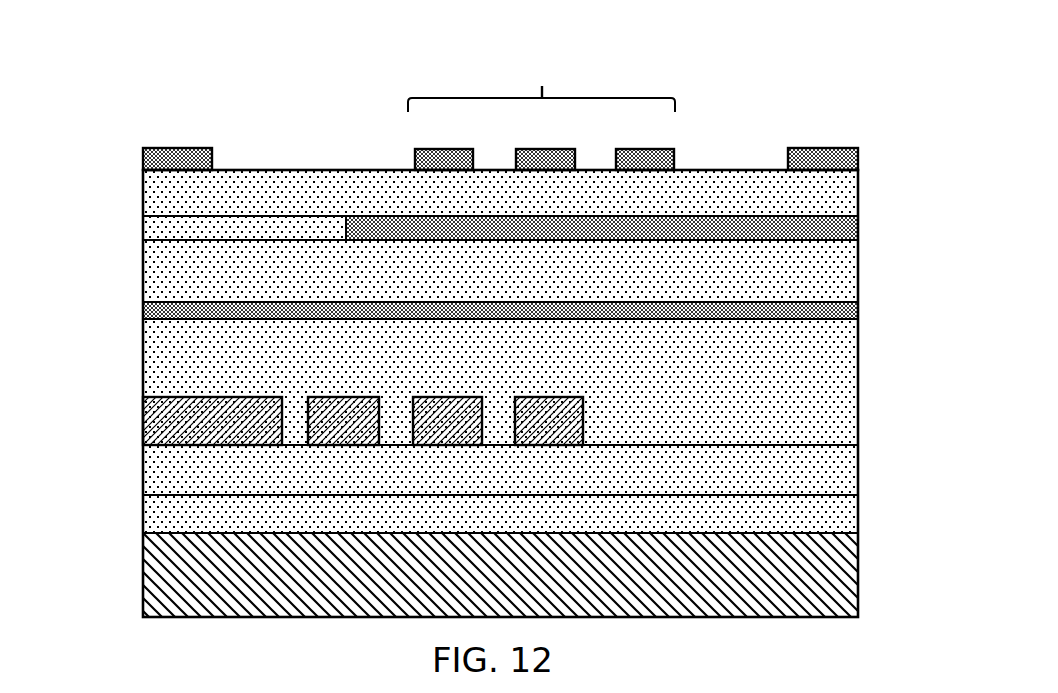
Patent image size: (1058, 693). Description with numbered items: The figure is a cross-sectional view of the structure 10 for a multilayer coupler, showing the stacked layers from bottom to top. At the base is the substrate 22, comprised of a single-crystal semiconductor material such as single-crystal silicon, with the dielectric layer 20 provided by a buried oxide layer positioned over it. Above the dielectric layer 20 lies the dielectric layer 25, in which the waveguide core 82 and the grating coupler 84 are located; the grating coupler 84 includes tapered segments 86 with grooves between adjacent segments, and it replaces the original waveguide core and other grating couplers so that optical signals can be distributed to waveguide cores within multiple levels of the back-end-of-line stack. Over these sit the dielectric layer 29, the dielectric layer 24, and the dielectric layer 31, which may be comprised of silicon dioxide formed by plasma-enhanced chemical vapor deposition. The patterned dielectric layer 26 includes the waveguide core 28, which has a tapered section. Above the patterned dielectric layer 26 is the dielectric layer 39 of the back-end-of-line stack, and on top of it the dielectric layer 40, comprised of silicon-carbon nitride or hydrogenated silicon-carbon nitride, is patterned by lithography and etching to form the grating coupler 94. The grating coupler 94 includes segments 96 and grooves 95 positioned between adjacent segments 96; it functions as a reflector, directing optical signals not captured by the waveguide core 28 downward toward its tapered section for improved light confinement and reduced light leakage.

The structure 10 is at (156, 103).
The dielectric layer 20 is at (820, 515).
The substrate 22 is at (830, 585).
The dielectric layer 24 is at (187, 312).
The dielectric layer 25 is at (820, 465).
The patterned dielectric layer 26 is at (872, 225).
The waveguide core 28 is at (380, 227).
The dielectric layer 29 is at (826, 366).
The dielectric layer 31 is at (830, 270).
The dielectric layer 39 is at (830, 195).
The dielectric layer 40 is at (167, 163).
The waveguide core 82 is at (190, 415).
The grating coupler 84 is at (597, 423).
The tapered segments 86 is at (332, 433).
The grating coupler 94 is at (541, 81).
The grooves 95 is at (508, 160).
The segments 96 is at (425, 162).